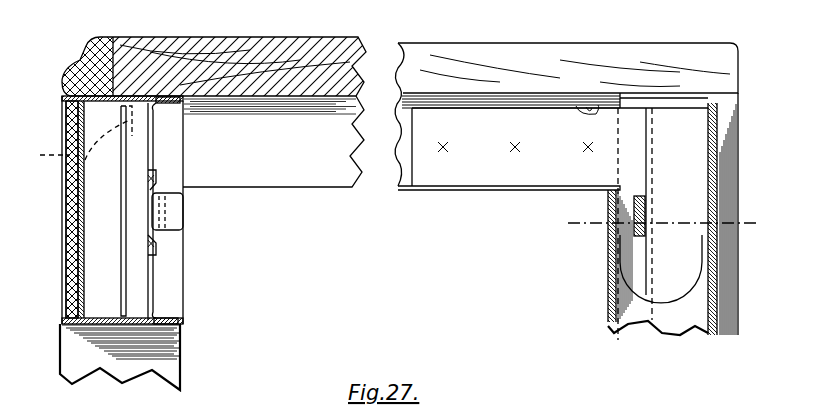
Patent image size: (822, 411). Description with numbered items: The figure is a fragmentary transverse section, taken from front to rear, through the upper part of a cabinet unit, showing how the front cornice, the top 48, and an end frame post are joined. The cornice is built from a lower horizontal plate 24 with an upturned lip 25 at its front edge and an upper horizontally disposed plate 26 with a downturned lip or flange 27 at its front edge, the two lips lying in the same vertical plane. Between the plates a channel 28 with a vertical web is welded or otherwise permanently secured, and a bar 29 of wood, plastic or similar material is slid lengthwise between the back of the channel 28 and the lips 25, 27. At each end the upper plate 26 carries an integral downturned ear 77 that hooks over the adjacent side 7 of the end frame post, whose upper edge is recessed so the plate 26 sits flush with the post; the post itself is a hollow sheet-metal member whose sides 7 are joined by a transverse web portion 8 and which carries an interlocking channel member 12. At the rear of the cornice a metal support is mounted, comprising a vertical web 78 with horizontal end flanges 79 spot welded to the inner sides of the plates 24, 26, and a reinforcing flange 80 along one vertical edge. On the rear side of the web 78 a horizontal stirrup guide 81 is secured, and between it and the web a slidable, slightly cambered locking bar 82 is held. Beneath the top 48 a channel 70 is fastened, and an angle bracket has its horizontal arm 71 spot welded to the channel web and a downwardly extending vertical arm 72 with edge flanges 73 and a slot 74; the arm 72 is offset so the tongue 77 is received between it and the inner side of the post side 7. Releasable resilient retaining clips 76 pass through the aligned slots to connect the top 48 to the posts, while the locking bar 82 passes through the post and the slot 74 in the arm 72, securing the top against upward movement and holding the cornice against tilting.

The sides 7 is at (176, 352).
The transverse web portion 8 is at (608, 300).
The channel member 12 is at (720, 282).
The lower horizontal plate 24 is at (180, 328).
The upturned lip 25 is at (63, 304).
The upper horizontally disposed plate 26 is at (90, 70).
The downturned lip or flange 27 is at (66, 106).
The channel 28 is at (110, 258).
The bar 29 is at (64, 258).
The top 48 is at (300, 60).
The channel 70 is at (400, 192).
The horizontal arm 71 is at (490, 165).
The vertical arm 72 is at (676, 290).
The flanges 73 is at (610, 255).
The slot 74 is at (712, 160).
The releasable retaining clip 76 is at (645, 205).
The downturned ear 77 is at (68, 145).
The vertical web 78 is at (150, 148).
The horizontal end flanges 79 is at (170, 104).
The flange 80 is at (128, 160).
The horizontal stirrup guide 81 is at (160, 238).
The locking bar 82 is at (172, 222).